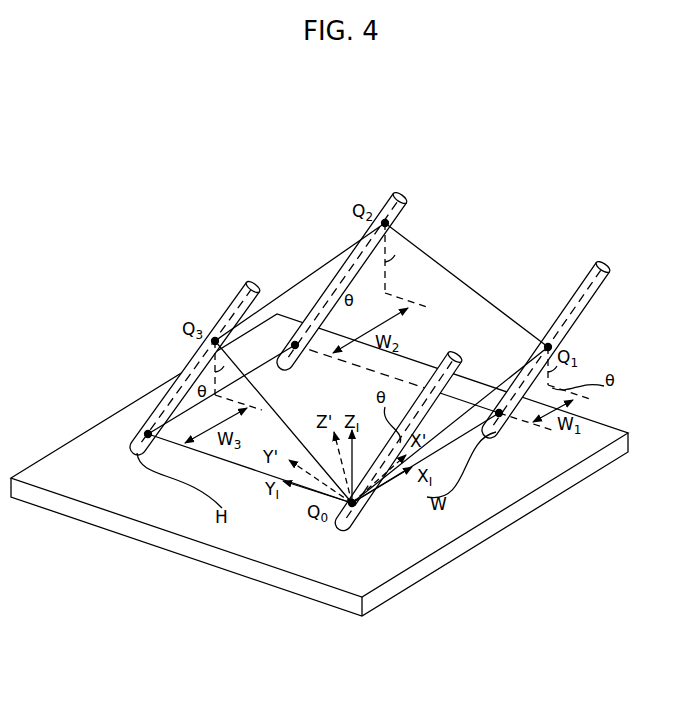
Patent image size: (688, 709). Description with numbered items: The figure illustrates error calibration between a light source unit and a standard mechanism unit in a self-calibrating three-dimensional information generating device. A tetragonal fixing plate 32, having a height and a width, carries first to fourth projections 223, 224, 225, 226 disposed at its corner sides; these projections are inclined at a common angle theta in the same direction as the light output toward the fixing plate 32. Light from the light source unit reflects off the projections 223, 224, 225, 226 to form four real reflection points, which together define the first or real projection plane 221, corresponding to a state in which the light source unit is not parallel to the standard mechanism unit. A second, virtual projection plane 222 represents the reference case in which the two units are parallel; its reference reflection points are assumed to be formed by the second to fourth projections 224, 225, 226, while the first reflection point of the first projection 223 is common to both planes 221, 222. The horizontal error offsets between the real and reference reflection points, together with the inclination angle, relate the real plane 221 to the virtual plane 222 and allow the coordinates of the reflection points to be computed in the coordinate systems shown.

The fixing plate 32 is at (300, 600).
The first projection plane 221 is at (305, 280).
The second projection plane 222 is at (490, 433).
The first projection 223 is at (347, 525).
The second projection 224 is at (603, 258).
The third projection 225 is at (400, 190).
The fourth projection 226 is at (232, 303).